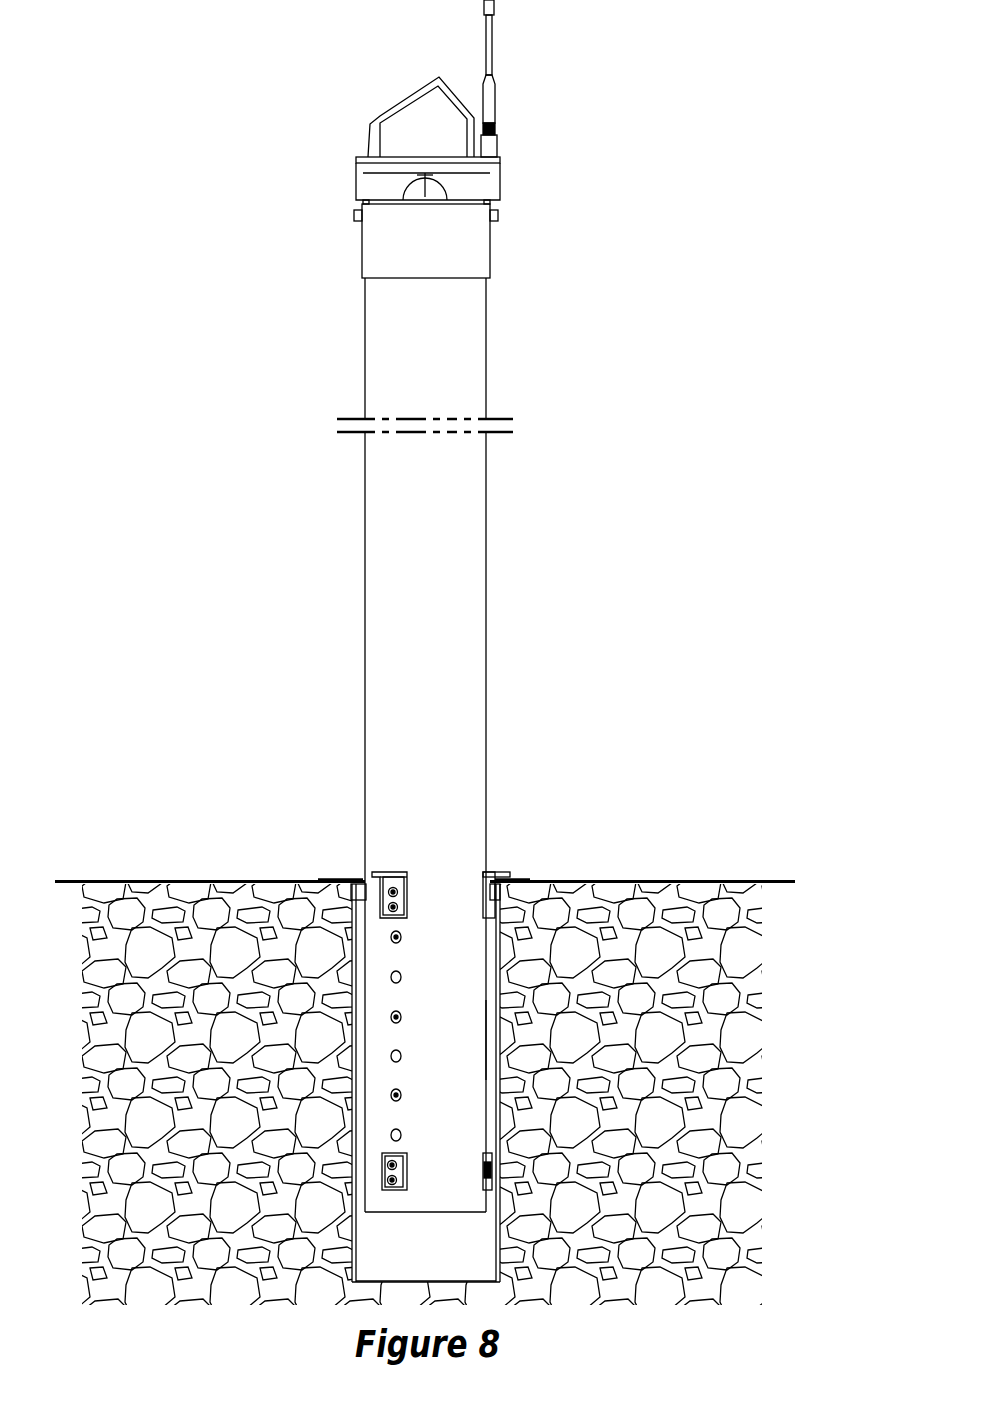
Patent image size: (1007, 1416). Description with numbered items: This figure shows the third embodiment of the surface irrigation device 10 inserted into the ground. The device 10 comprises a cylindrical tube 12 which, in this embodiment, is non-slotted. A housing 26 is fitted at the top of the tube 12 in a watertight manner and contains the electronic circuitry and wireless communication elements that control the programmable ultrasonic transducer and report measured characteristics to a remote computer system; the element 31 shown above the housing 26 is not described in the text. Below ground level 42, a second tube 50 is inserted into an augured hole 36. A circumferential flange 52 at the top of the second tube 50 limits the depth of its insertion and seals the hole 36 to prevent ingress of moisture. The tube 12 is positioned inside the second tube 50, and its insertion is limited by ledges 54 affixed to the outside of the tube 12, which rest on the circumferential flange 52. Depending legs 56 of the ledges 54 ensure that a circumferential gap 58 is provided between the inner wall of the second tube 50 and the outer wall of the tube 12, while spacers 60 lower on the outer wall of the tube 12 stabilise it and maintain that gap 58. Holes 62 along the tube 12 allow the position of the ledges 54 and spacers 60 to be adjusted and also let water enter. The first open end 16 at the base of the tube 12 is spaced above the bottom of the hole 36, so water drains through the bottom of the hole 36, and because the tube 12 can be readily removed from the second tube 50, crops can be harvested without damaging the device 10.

The surface irrigation device 10 is at (116, 76).
The cylindrical tube 12 is at (486, 347).
The first open end 16 is at (455, 1212).
The housing 26 is at (465, 110).
The antenna 31 is at (494, 45).
The augured hole 36 is at (434, 1270).
The ground level 42 is at (652, 880).
The second tube 50 is at (356, 1225).
The circumferential flange 52 is at (331, 878).
The ledges 54 is at (377, 872).
The depending legs 56 is at (383, 898).
The circumferential gap 58 is at (492, 1037).
The spacers 60 is at (382, 1172).
The holes 62 is at (391, 937).